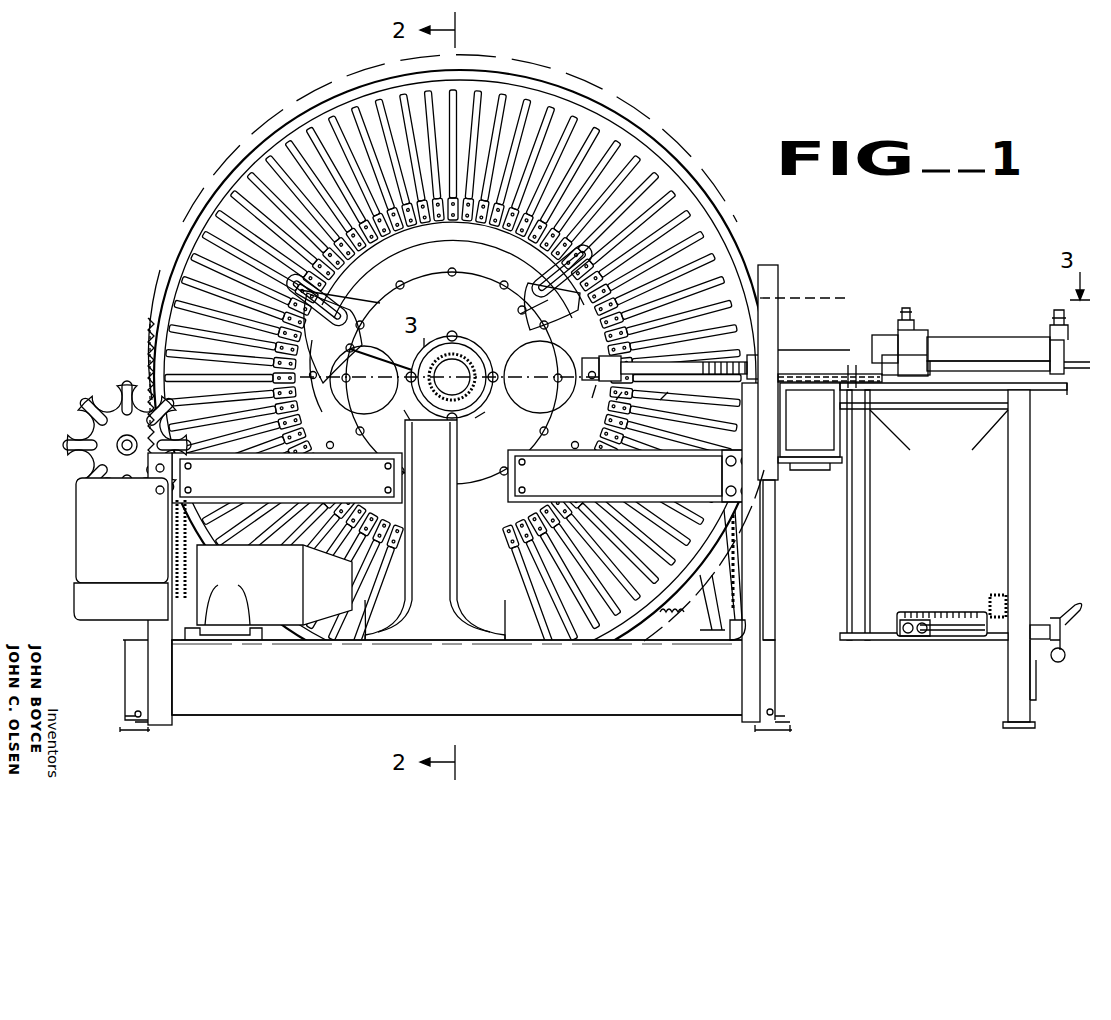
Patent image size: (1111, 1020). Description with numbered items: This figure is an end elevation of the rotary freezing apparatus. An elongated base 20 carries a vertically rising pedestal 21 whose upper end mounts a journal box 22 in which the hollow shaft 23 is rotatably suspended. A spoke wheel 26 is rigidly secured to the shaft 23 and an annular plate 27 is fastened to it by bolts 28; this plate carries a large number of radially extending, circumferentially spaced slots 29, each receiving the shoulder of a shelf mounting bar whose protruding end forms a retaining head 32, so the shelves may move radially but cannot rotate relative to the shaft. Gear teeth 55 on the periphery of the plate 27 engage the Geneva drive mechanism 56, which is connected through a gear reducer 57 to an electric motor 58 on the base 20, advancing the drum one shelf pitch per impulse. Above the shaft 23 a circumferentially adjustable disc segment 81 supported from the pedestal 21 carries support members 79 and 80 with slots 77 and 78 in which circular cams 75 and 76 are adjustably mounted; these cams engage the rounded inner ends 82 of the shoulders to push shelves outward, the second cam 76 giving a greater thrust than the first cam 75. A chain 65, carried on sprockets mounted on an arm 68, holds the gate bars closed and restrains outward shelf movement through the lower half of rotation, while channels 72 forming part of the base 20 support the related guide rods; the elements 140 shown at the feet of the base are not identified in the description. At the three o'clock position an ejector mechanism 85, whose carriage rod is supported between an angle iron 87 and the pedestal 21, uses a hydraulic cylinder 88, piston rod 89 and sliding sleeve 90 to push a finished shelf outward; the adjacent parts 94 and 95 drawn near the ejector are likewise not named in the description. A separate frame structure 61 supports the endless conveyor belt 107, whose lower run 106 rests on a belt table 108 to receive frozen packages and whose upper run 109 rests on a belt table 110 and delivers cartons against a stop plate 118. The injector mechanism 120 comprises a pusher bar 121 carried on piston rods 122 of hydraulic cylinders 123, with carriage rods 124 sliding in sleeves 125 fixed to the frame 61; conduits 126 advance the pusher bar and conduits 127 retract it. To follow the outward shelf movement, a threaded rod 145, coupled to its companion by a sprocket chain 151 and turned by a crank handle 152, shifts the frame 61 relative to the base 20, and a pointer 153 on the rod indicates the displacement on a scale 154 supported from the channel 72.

The base 20 is at (340, 698).
The pedestal 21 is at (400, 612).
The journal box 22 is at (405, 398).
The hollow shaft 23 is at (445, 402).
The spoke wheel 26 is at (360, 440).
The annular plate 27 is at (148, 336).
The bolts 28 is at (445, 270).
The radial slot 29 is at (288, 277).
The retaining head 32 is at (605, 325).
The gear teeth 55 is at (140, 360).
The Geneva drive mechanism 56 is at (72, 468).
The gear reducer 57 is at (132, 538).
The electric motor 58 is at (268, 581).
The frame structure 61 is at (775, 610).
The chain 65 is at (740, 540).
The arm 68 is at (712, 608).
The channel 72 is at (140, 735).
The first circular cam 75 is at (355, 345).
The second circular cam 76 is at (520, 315).
The slot 77 is at (378, 303).
The slot 78 is at (510, 252).
The support member 79 is at (300, 292).
The support member 80 is at (607, 248).
The disc segment 81 is at (370, 360).
The rounded inner end 82 is at (405, 418).
The ejector mechanism 85 is at (588, 400).
The angle iron 87 is at (785, 345).
The hydraulic cylinder 88 is at (540, 408).
The piston rod 89 is at (620, 405).
The sleeve 90 is at (663, 405).
The pin 94 is at (480, 420).
The link 95 is at (592, 400).
The lower run 106 is at (840, 447).
The endless conveyor belt 107 is at (800, 445).
The belt table 108 is at (815, 472).
The upper run 109 is at (820, 375).
The belt table 110 is at (810, 423).
The stop plate 118 is at (790, 370).
The injector mechanism 120 is at (960, 330).
The pusher bar 121 is at (860, 385).
The piston rod 122 is at (878, 340).
The hydraulic cylinder 123 is at (990, 350).
The carriage rod 124 is at (1010, 390).
The sleeve 125 is at (912, 360).
The conduit 126 is at (1063, 315).
The conduit 127 is at (905, 315).
The foot bracket 140 is at (135, 713).
The rod 145 is at (1065, 648).
The sprocket chain 151 is at (998, 605).
The crank handle 152 is at (1055, 615).
The pointer 153 is at (912, 640).
The scale 154 is at (965, 612).